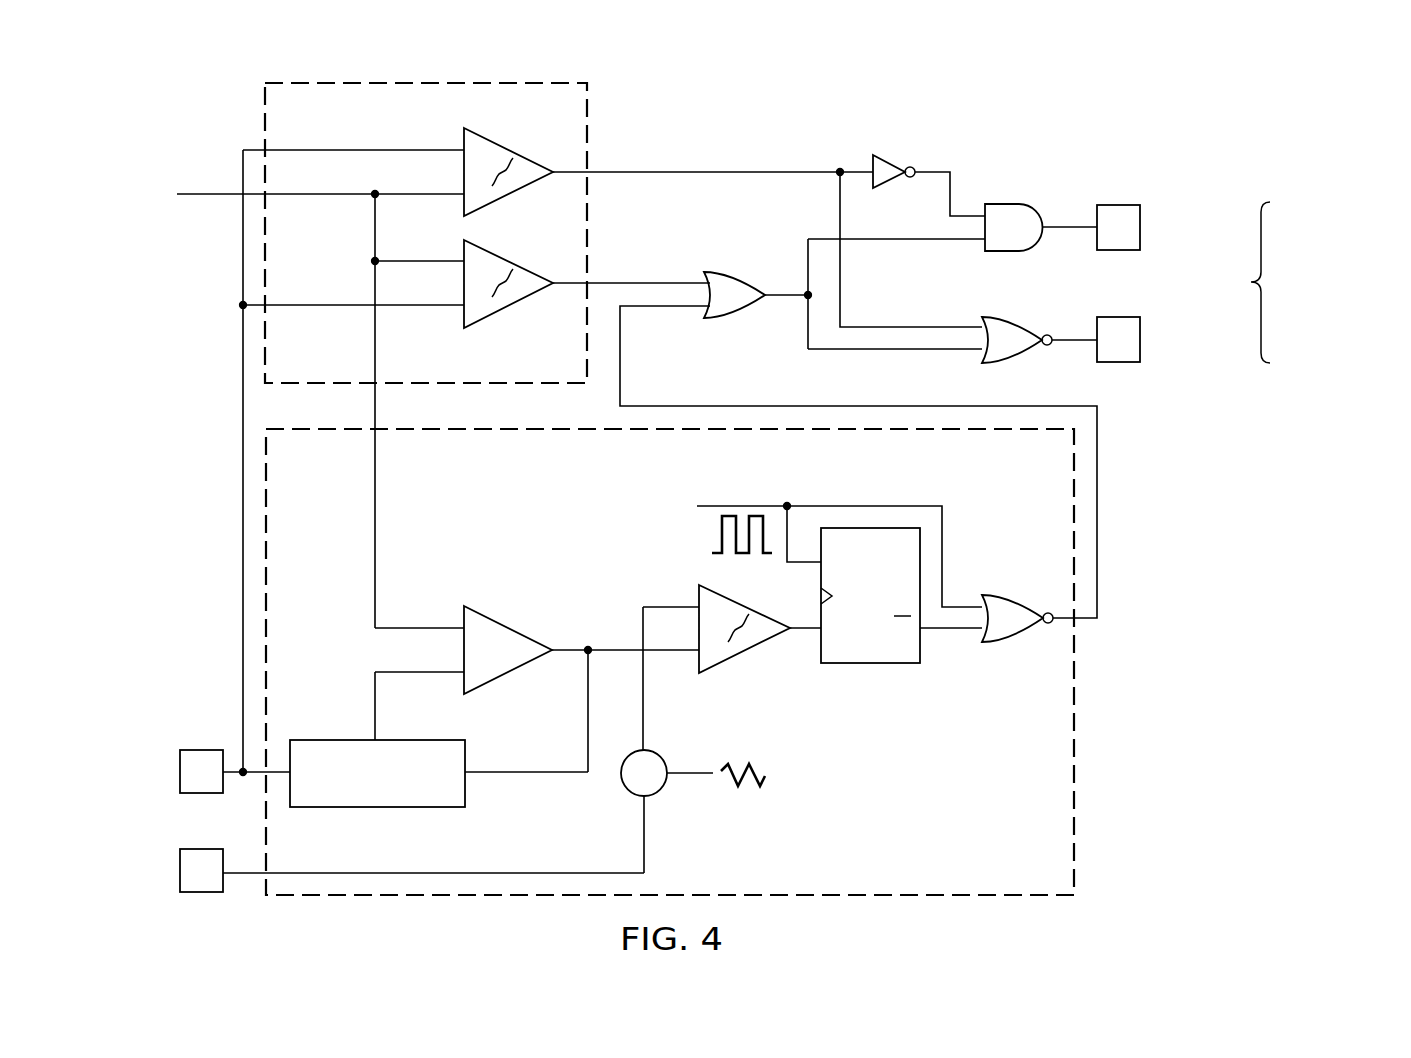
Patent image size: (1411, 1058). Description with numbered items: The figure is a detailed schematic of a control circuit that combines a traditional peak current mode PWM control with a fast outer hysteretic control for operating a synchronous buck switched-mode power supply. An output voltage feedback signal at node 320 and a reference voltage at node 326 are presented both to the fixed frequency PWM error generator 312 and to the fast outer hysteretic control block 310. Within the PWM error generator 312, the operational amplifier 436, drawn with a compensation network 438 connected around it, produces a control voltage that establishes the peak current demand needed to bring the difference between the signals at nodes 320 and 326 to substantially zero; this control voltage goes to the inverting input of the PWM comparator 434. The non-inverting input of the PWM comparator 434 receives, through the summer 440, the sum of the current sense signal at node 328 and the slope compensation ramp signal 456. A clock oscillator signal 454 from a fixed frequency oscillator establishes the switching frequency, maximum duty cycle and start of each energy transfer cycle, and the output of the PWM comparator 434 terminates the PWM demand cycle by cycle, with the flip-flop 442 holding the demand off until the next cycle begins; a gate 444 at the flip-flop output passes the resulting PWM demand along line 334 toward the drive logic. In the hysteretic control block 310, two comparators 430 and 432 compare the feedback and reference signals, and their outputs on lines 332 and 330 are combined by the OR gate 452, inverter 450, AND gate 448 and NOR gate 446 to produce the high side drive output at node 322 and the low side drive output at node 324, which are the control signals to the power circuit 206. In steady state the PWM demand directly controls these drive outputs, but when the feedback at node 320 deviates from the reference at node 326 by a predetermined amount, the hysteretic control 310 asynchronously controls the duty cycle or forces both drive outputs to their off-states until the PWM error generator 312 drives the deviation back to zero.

The hysteretic control block 310 is at (265, 112).
The PWM error generator 312 is at (1076, 707).
The output voltage feedback node 320 is at (200, 750).
The high side drive output node 322 is at (1117, 205).
The low side drive output node 324 is at (1117, 362).
The reference voltage node 326 is at (212, 193).
The current sense node 328 is at (205, 892).
The comparator output line 330 is at (590, 283).
The comparator output line 332 is at (590, 172).
The feedback line 334 is at (1097, 512).
The comparator 430 is at (512, 150).
The comparator 432 is at (512, 262).
The PWM comparator 434 is at (745, 657).
The operational amplifier 436 is at (511, 677).
The compensation network 438 is at (365, 807).
The summer 440 is at (632, 797).
The flip-flop 442 is at (870, 663).
The NOR gate 444 is at (1010, 642).
The NOR gate 446 is at (1005, 317).
The AND gate 448 is at (1005, 204).
The inverter 450 is at (893, 158).
The OR gate 452 is at (730, 272).
The clock oscillator signal 454 is at (742, 506).
The slope compensation ramp signal 456 is at (688, 777).
The power circuit 206 is at (1321, 282).